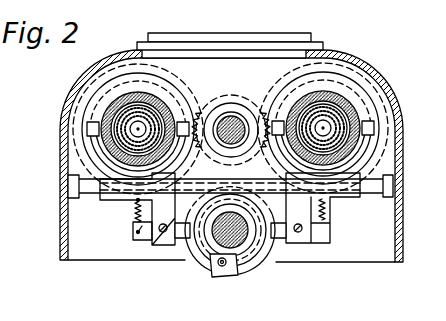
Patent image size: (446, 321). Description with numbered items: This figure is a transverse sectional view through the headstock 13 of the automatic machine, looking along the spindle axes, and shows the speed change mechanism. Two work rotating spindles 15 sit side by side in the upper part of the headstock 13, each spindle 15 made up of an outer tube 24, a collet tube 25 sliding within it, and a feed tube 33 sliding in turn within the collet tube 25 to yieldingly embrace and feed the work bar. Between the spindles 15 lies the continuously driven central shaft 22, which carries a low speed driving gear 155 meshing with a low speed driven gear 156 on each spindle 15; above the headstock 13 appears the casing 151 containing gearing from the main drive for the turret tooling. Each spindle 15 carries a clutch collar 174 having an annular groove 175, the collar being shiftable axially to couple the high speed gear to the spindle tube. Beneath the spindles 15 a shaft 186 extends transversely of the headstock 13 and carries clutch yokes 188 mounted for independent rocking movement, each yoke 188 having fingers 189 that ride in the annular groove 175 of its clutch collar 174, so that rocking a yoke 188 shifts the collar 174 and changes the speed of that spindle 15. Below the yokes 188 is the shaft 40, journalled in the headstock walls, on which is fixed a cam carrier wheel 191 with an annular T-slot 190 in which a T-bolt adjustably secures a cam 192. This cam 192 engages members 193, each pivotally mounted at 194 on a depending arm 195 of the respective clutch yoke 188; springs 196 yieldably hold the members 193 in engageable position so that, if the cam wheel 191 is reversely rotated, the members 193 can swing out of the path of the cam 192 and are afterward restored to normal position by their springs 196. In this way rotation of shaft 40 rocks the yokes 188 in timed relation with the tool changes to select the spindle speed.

The headstock 13 is at (350, 55).
The work rotating spindle 15 is at (352, 91).
The casing 151 is at (273, 41).
The clutch collar 174 is at (360, 108).
The annular groove 175 is at (381, 113).
The finger 189 is at (377, 127).
The feed tube 33 is at (133, 100).
The collet tube 25 is at (147, 102).
The outer tube 24 is at (159, 102).
The low speed driven gear 156 is at (191, 108).
The low speed driving gear 155 is at (271, 109).
The central shaft 22 is at (231, 130).
The shaft 40 is at (230, 230).
The spring 196 is at (133, 214).
The depending arm 195 is at (175, 245).
The cam 192 is at (223, 268).
The annular T-slot 190 is at (243, 264).
The cam carrier wheel 191 is at (257, 271).
The member 193 is at (277, 239).
The pivot 194 is at (300, 231).
The shaft 186 is at (378, 194).
The clutch yoke 188 is at (349, 198).